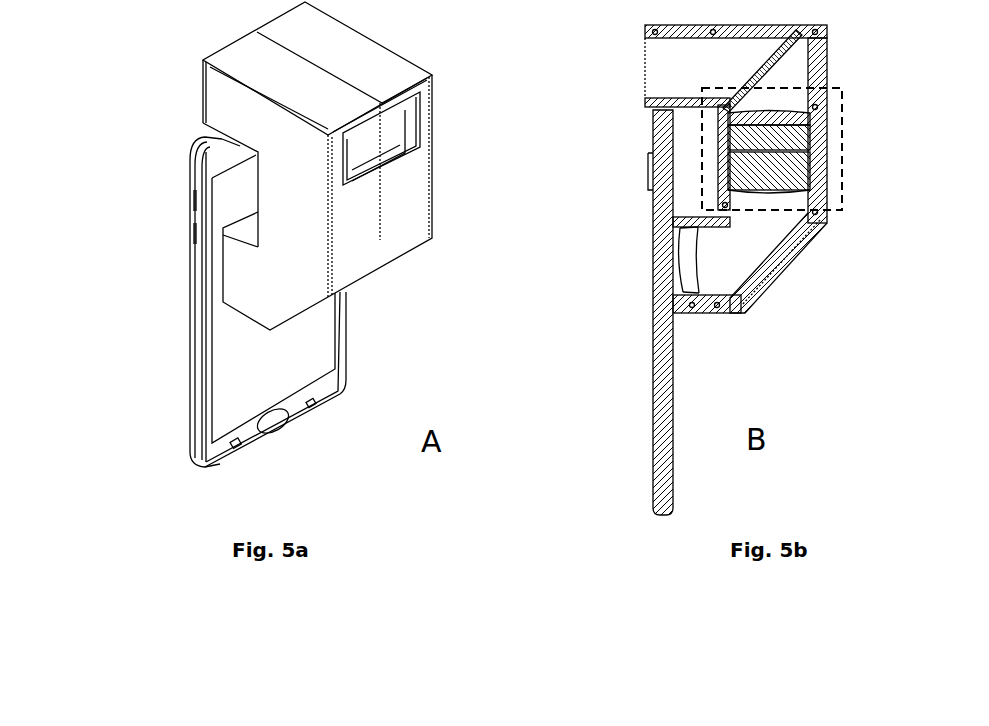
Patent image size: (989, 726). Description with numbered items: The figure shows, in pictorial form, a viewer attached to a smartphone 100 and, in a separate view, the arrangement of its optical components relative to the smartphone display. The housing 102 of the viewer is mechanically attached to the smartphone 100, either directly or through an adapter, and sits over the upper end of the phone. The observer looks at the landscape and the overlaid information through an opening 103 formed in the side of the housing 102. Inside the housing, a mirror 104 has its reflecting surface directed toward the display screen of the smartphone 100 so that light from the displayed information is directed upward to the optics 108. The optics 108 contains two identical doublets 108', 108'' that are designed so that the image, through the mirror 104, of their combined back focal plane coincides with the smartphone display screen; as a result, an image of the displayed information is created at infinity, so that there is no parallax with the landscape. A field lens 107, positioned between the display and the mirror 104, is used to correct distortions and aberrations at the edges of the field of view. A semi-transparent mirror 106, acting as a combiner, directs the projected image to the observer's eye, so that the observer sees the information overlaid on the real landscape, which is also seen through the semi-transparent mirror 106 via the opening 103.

In FIG. 5A, the smartphone 100 is at (196, 393).
In FIG. 5B, the smartphone 100 is at (653, 420).
In FIG. 5A, the housing 102 is at (415, 220).
In FIG. 5A, the opening 103 is at (393, 124).
In FIG. 5B, the mirror 104 is at (762, 287).
In FIG. 5B, the semi-transparent mirror 106 is at (753, 72).
In FIG. 5B, the field lens 107 is at (693, 262).
In FIG. 5B, the optics 108 is at (829, 105).
In FIG. 5B, the first doublet 108' is at (832, 123).
In FIG. 5B, the second doublet 108'' is at (835, 175).